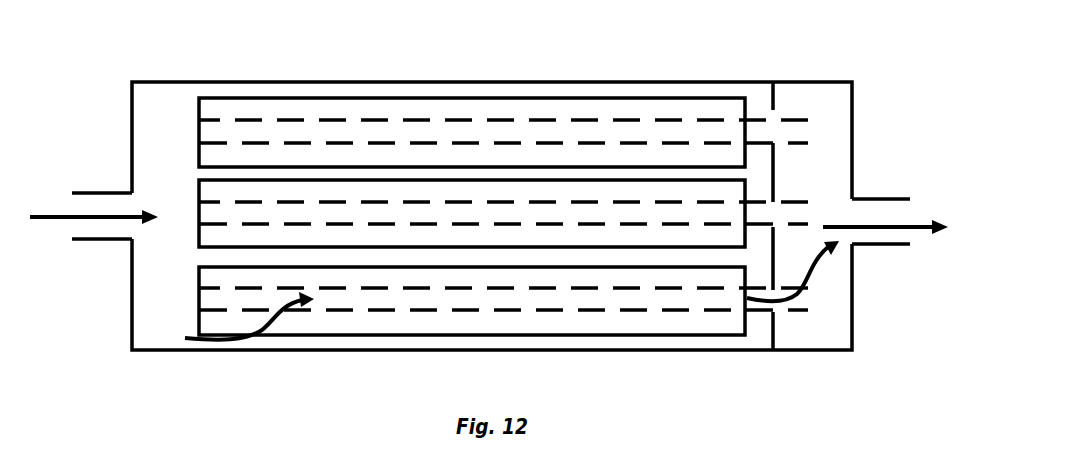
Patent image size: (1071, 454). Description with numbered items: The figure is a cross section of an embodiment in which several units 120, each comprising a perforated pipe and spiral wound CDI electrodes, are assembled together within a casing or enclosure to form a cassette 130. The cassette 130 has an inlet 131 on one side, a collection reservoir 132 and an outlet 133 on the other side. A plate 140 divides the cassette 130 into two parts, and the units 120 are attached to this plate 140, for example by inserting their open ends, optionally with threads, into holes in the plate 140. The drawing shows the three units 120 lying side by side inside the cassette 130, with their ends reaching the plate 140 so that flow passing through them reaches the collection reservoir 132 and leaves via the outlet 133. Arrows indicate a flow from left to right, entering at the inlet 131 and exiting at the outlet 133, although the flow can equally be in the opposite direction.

The unit 120 is at (193, 143).
The cassette 130 is at (503, 82).
The inlet 131 is at (113, 240).
The collection reservoir 132 is at (815, 325).
The outlet 133 is at (872, 245).
The plate 140 is at (772, 110).